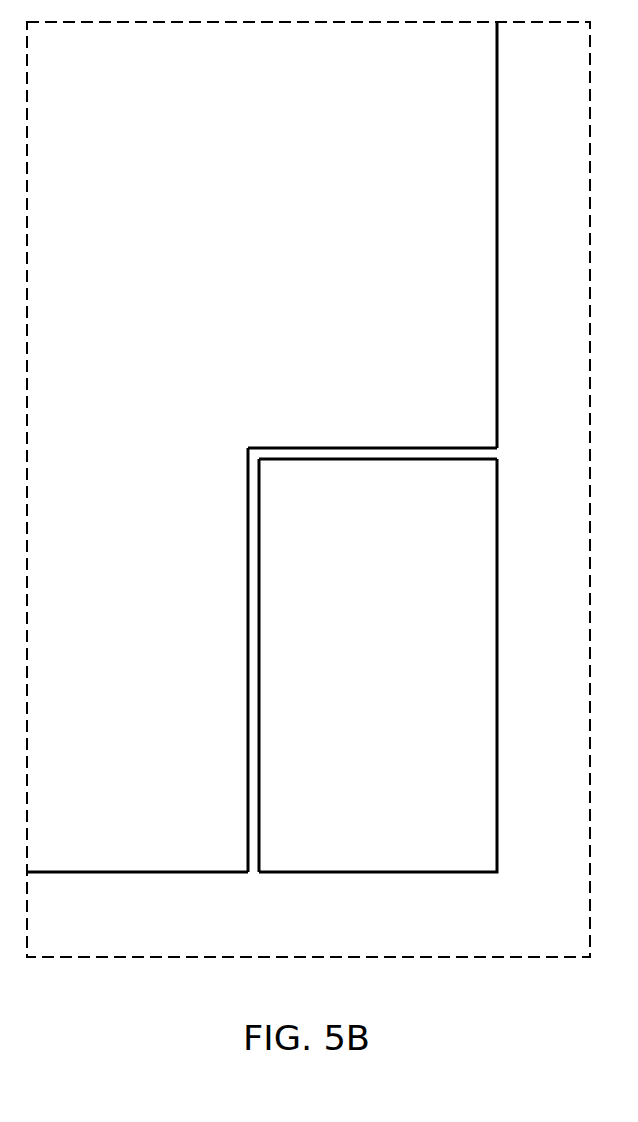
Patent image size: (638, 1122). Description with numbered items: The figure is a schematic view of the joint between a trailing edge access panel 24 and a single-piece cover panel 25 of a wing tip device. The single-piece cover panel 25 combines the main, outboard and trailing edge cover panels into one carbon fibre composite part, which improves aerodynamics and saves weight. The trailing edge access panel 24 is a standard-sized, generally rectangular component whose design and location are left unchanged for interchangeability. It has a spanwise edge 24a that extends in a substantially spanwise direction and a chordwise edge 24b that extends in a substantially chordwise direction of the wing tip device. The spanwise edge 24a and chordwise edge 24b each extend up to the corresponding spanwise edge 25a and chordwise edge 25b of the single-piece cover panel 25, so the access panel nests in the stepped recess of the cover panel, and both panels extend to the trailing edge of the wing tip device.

The single-piece cover panel 25 is at (394, 282).
The spanwise edge of the single-piece cover panel 25a is at (343, 446).
The chordwise edge of the single-piece cover panel 25b is at (247, 725).
The trailing edge access panel 24 is at (394, 660).
The spanwise edge 24a is at (403, 461).
The chordwise edge 24b is at (262, 777).